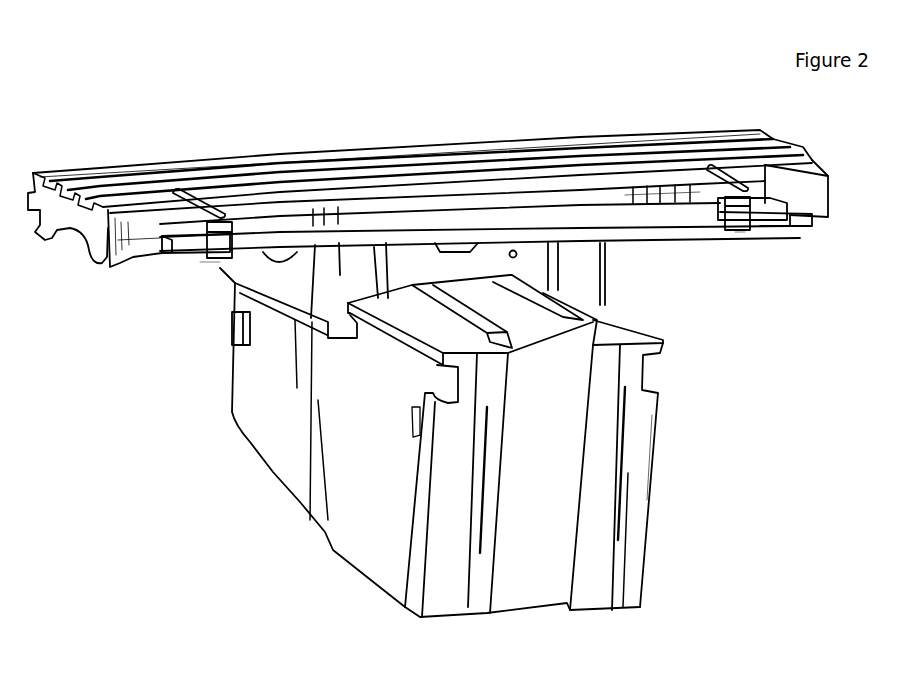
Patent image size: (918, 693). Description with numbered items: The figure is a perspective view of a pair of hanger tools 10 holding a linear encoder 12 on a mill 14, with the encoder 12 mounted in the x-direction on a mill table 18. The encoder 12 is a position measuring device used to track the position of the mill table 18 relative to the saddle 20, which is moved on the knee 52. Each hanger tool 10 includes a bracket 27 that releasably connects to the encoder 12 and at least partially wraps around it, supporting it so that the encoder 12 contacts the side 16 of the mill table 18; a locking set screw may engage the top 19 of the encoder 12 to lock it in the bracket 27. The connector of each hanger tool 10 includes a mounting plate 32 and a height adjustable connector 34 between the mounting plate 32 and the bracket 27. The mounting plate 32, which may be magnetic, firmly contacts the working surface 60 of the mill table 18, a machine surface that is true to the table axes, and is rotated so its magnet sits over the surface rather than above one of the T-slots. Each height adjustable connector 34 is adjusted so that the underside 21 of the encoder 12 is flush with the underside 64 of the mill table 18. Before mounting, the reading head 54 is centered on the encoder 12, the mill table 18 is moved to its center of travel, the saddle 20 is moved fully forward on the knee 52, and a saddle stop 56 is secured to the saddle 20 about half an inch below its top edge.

The hanger tool 10 is at (209, 281).
The linear encoder 12 is at (800, 218).
The mill 14 is at (653, 478).
The side 16 is at (812, 195).
The mill table 18 is at (800, 146).
The top 19 is at (708, 200).
The saddle 20 is at (605, 260).
The underside 21 is at (349, 280).
The bracket 27 is at (200, 258).
The mounting plate 32 is at (205, 218).
The height adjustable connector 34 is at (128, 242).
The knee 52 is at (657, 428).
The reading head 54 is at (440, 260).
The saddle stop 56 is at (518, 250).
The working surface 60 is at (130, 207).
The underside 64 is at (150, 252).